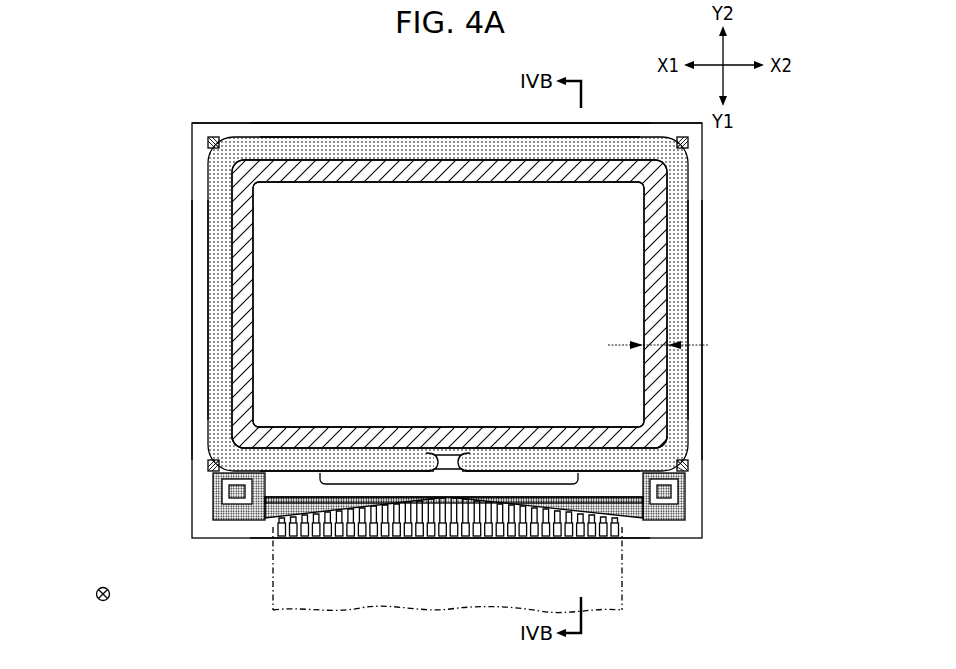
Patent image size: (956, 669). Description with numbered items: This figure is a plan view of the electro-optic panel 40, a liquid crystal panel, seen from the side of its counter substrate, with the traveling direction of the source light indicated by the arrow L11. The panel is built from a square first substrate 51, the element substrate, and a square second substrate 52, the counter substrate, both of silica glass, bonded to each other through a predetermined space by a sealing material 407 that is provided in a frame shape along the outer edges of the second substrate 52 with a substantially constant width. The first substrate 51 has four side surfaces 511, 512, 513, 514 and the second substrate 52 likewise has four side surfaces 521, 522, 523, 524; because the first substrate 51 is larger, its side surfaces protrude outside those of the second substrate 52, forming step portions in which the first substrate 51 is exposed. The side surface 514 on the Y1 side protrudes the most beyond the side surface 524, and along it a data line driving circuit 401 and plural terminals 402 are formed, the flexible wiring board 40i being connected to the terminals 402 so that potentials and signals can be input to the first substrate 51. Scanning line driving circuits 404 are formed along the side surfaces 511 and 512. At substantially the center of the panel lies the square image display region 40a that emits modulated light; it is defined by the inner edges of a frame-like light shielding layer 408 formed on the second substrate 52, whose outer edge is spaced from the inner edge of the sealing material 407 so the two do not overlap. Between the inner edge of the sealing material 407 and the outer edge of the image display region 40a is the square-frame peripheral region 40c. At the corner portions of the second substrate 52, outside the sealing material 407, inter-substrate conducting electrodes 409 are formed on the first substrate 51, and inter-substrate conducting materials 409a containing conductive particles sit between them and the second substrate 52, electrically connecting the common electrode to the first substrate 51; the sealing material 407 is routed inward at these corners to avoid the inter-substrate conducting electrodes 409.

The electro-optic panel 40 is at (612, 72).
The image display region 40a is at (292, 303).
The peripheral region 40c is at (668, 350).
The flexible wiring board 40i is at (623, 596).
The first substrate 51 is at (220, 540).
The side surface 511 is at (192, 324).
The side surface 512 is at (703, 381).
The side surface 513 is at (291, 123).
The side surface 514 is at (412, 540).
The second substrate 52 is at (292, 522).
The side surface 521 is at (208, 347).
The side surface 522 is at (690, 393).
The side surface 523 is at (331, 137).
The side surface 524 is at (388, 473).
The data line driving circuit 401 is at (622, 487).
The terminals 402 is at (456, 538).
The scanning line driving circuits 404 is at (236, 445).
The sealing material 407 is at (683, 256).
The light shielding layer 408 is at (656, 214).
The inter-substrate conducting electrodes 409 is at (214, 138).
The inter-substrate conducting materials 409a is at (209, 142).
The arrow indicating traveling direction of source light L11 is at (141, 596).